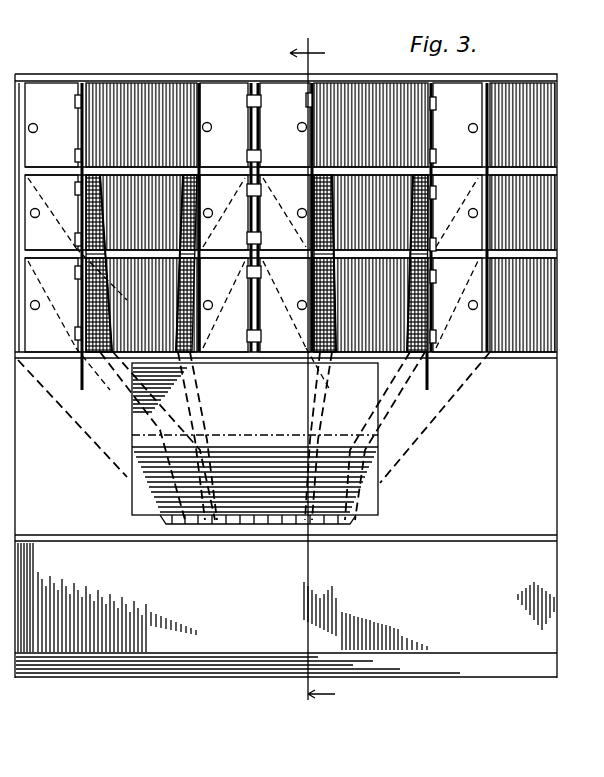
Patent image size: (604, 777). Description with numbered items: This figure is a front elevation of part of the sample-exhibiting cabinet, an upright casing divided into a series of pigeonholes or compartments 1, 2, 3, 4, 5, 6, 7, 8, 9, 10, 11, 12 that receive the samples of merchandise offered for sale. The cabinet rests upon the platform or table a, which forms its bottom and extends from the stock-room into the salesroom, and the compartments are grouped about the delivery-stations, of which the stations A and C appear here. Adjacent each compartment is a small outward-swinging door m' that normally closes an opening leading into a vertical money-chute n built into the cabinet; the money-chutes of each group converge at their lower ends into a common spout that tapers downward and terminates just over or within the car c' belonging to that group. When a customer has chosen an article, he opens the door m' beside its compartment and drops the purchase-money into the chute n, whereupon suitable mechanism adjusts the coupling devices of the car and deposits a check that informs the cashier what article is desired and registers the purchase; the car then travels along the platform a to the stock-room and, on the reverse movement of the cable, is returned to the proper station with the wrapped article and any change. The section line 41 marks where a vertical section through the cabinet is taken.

The delivery-station C is at (153, 88).
The compartment 1 is at (463, 289).
The compartment 2 is at (462, 200).
The compartment 3 is at (462, 120).
The compartment 4 is at (344, 305).
The compartment 5 is at (289, 202).
The compartment 6 is at (344, 125).
The compartment 7 is at (232, 125).
The compartment 8 is at (232, 204).
The compartment 9 is at (228, 286).
The compartment 10 is at (62, 135).
The compartment 11 is at (60, 218).
The compartment 12 is at (62, 298).
The outward-swinging door m' is at (261, 196).
The money-chute n is at (405, 318).
The car c' is at (254, 384).
The delivery-station A is at (230, 420).
The platform a is at (262, 655).
The section line 41 is at (313, 376).